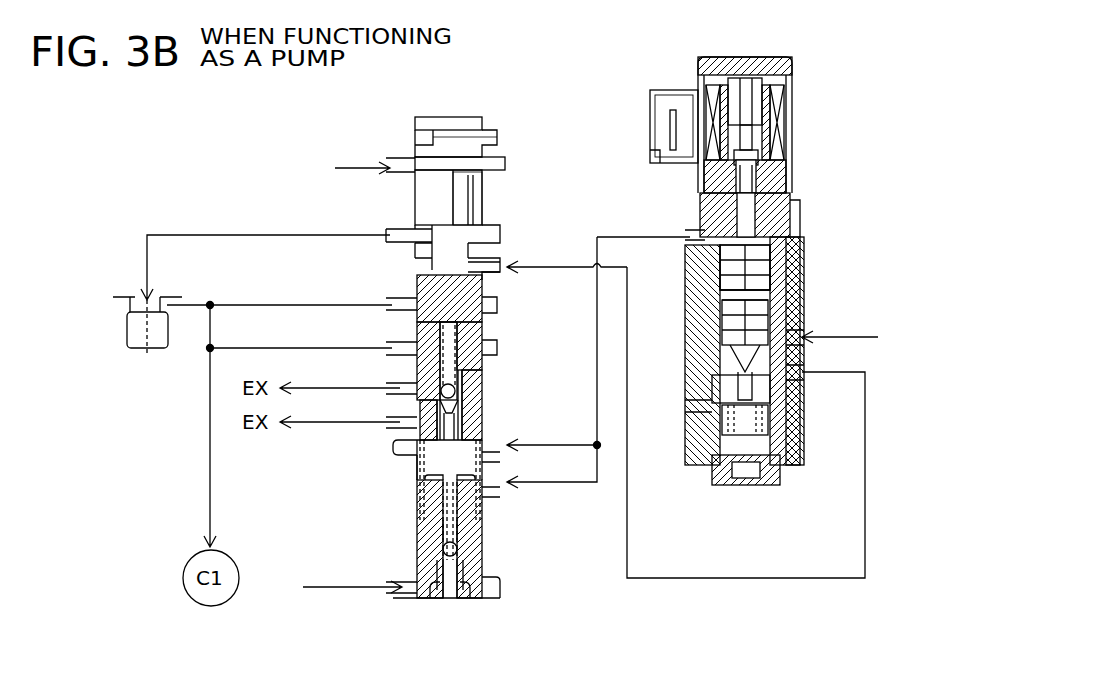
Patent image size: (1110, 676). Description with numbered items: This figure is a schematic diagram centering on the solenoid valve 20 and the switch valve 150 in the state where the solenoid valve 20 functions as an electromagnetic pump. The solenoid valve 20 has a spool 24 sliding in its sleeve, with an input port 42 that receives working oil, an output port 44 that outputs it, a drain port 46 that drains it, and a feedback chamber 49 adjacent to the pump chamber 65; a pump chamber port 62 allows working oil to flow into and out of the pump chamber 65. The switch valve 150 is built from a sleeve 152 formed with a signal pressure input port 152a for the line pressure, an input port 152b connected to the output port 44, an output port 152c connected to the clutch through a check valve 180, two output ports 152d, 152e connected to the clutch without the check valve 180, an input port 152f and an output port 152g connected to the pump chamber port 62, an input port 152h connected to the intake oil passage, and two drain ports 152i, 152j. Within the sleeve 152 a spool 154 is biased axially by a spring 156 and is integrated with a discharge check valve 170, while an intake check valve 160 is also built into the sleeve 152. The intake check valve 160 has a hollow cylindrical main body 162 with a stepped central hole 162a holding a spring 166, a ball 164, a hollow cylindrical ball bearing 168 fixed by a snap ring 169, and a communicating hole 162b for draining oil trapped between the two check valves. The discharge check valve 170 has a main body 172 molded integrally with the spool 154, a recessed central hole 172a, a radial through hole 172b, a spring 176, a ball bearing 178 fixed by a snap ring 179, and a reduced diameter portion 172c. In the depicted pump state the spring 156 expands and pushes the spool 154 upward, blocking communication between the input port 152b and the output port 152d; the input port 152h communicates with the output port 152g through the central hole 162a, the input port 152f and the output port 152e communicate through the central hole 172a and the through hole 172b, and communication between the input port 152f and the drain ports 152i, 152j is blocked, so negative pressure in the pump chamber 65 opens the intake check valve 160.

The solenoid valve 20 is at (800, 82).
The spool 24 is at (770, 270).
The input port 42 is at (800, 325).
The output port 44 is at (803, 364).
The drain port 46 is at (690, 406).
The feedback chamber 49 is at (780, 290).
The pump chamber port 62 is at (686, 232).
The pump chamber 65 is at (800, 225).
The switch valve 150 is at (497, 117).
The sleeve 152 is at (415, 135).
The signal pressure input port 152a is at (400, 160).
The input port 152b is at (497, 262).
The output port 152c is at (400, 230).
The output port 152d is at (402, 298).
The output port 152e is at (402, 343).
The input port 152f is at (497, 455).
The output port 152g is at (497, 490).
The input port 152h is at (403, 580).
The drain port 152i is at (400, 383).
The drain port 152j is at (400, 417).
The spool 154 is at (470, 200).
The spring 156 is at (420, 492).
The intake check valve 160 is at (487, 565).
The main body 162 is at (420, 510).
The central hole 162a is at (460, 590).
The communicating hole 162b is at (480, 520).
The ball 164 is at (482, 545).
The spring 166 is at (420, 535).
The ball bearing 168 is at (435, 556).
The snap ring 169 is at (436, 590).
The discharge check valve 170 is at (487, 378).
The main body 172 is at (482, 394).
The central hole 172a is at (418, 462).
The through hole 172b is at (470, 340).
The reduced diameter portion 172c is at (410, 446).
The spring 176 is at (485, 350).
The ball bearing 178 is at (462, 408).
The snap ring 179 is at (478, 432).
The check valve 180 is at (168, 297).